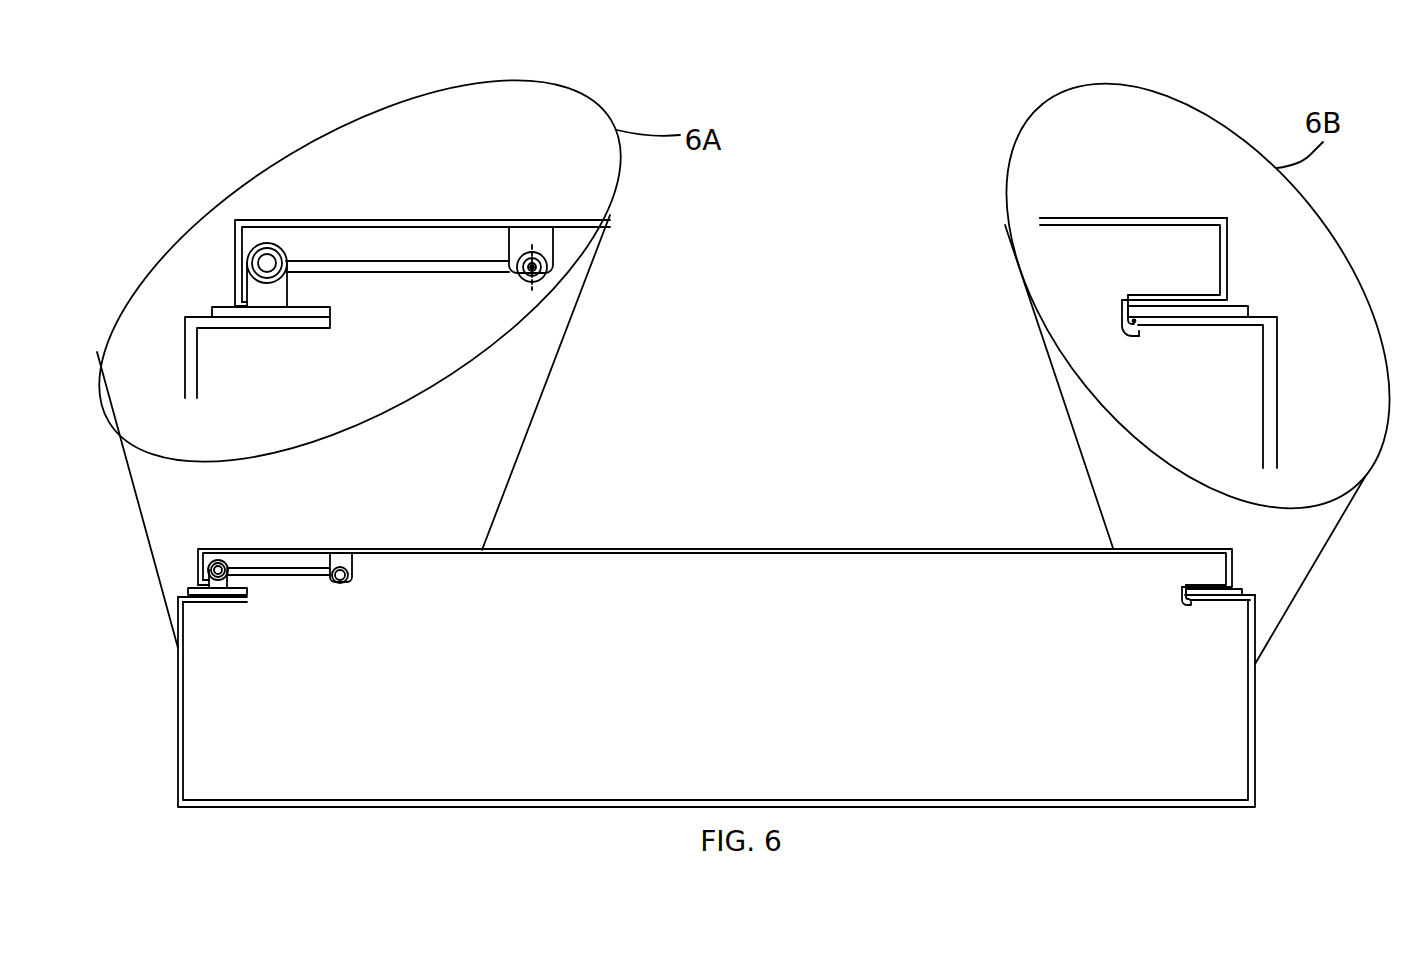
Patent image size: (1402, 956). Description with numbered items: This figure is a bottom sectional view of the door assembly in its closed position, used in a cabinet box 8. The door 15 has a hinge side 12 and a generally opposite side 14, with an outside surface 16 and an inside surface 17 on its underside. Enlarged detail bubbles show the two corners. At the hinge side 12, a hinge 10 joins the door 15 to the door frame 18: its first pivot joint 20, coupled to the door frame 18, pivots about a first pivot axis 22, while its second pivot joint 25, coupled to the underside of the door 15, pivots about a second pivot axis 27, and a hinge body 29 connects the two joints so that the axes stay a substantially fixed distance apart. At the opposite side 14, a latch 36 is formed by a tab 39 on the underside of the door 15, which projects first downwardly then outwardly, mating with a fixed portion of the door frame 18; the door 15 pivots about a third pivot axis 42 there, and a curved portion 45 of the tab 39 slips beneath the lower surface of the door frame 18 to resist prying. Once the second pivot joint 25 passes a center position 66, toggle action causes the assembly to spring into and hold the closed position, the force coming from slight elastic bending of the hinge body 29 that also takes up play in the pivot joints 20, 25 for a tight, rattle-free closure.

The cabinet box 8 is at (862, 800).
The hinge 10 is at (403, 318).
The hinge side 12 is at (223, 514).
The generally opposite side 14 is at (1165, 177).
The door 15 is at (847, 550).
The outside surface 16 is at (695, 548).
The inside surface 17 is at (708, 555).
The door frame 18 is at (258, 325).
The first pivot joint 20 is at (208, 570).
The first pivot axis 22 is at (282, 260).
The second pivot joint 25 is at (550, 280).
The second pivot axis 27 is at (517, 280).
The hinge body 29 is at (422, 263).
The latch 36 is at (1120, 363).
The tab 39 is at (1128, 318).
The third pivot axis 42 is at (1140, 327).
The curved portion 45 is at (1132, 333).
The center position 66 is at (540, 260).